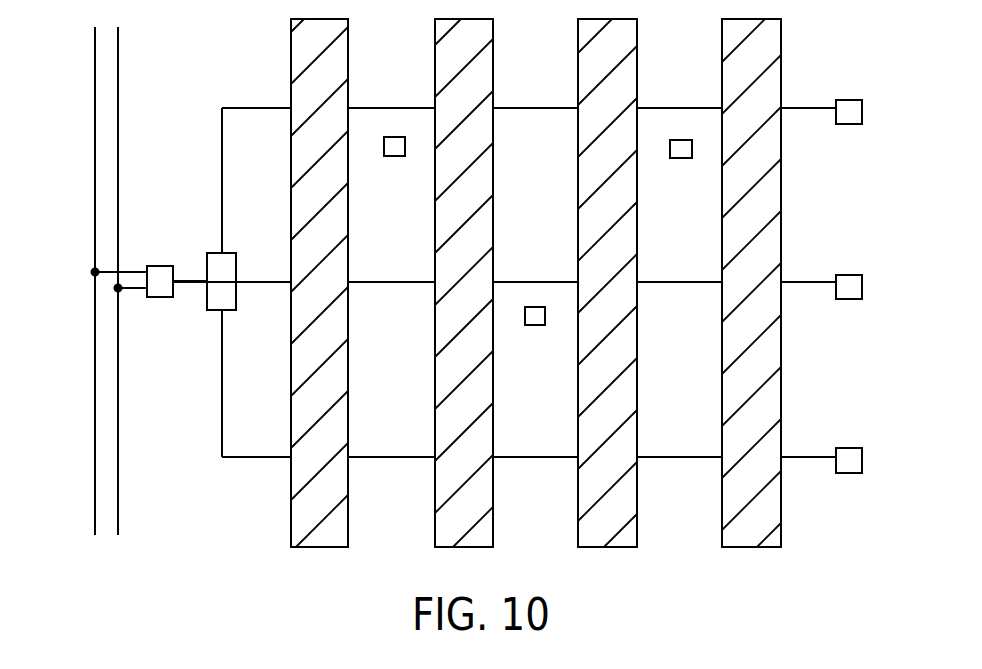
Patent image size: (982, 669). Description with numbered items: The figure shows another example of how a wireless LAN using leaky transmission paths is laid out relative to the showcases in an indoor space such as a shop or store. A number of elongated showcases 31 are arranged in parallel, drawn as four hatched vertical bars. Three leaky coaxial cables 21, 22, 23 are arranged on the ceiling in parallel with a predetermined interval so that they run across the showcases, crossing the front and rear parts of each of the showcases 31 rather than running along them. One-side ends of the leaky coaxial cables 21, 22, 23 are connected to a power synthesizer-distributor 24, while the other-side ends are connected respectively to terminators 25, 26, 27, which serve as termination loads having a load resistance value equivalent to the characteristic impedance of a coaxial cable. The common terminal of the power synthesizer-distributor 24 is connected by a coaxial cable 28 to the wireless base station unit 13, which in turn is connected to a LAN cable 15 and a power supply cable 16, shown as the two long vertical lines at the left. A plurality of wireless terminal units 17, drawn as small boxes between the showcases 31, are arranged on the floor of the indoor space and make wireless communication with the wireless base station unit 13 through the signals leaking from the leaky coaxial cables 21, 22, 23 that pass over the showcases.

The wireless base station unit 13 is at (160, 298).
The LAN cable 15 is at (94, 82).
The power supply cable 16 is at (119, 128).
The wireless terminal unit 17 is at (394, 157).
The leaky coaxial cable 21 is at (533, 107).
The leaky coaxial cable 22 is at (533, 281).
The leaky coaxial cable 23 is at (533, 456).
The power synthesizer-distributor 24 is at (217, 252).
The terminator 25 is at (849, 99).
The terminator 26 is at (850, 274).
The terminator 27 is at (850, 447).
The coaxial cable 28 is at (186, 279).
The showcase 31 is at (349, 48).